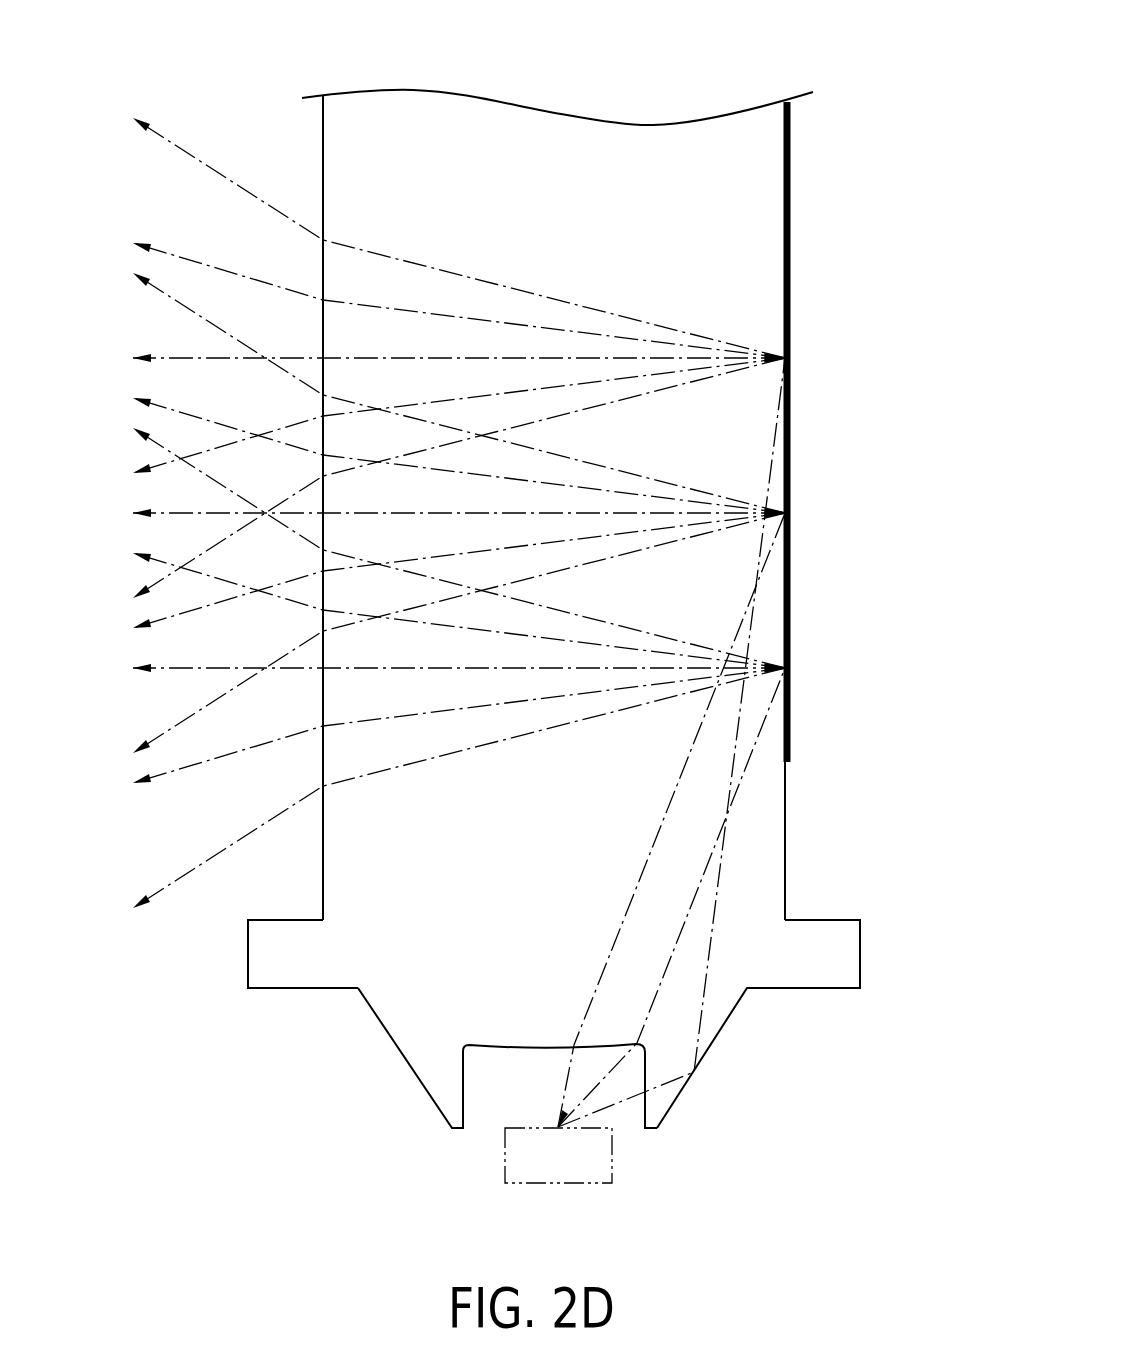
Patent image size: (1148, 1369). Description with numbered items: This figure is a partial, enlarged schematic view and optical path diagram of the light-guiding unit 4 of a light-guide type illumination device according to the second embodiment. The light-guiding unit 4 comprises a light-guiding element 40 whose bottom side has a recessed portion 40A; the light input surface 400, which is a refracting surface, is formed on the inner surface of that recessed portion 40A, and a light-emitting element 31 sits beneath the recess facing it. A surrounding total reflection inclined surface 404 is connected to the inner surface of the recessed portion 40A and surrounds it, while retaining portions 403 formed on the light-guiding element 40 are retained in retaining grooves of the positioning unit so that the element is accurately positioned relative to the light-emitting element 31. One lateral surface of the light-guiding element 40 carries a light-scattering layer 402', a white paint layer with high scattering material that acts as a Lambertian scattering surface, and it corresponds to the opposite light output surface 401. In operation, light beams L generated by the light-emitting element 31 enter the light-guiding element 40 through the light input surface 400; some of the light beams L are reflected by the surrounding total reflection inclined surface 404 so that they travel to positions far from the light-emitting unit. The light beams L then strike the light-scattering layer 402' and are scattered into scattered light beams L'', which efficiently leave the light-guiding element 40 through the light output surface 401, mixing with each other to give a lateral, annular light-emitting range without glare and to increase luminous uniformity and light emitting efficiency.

The light-guiding unit 4 is at (588, 43).
The light-guiding element 40 is at (572, 146).
The light input surface 400 is at (503, 1045).
The light output surface 401 is at (323, 137).
The light-scattering layer 402' is at (837, 511).
The retaining portion 403 is at (270, 958).
The surrounding total reflection inclined surface 404 is at (731, 1014).
The recessed portion 40A is at (493, 1092).
The light-emitting element 31 is at (612, 1150).
The light beams L is at (696, 742).
The scattered light beams L'' is at (445, 513).